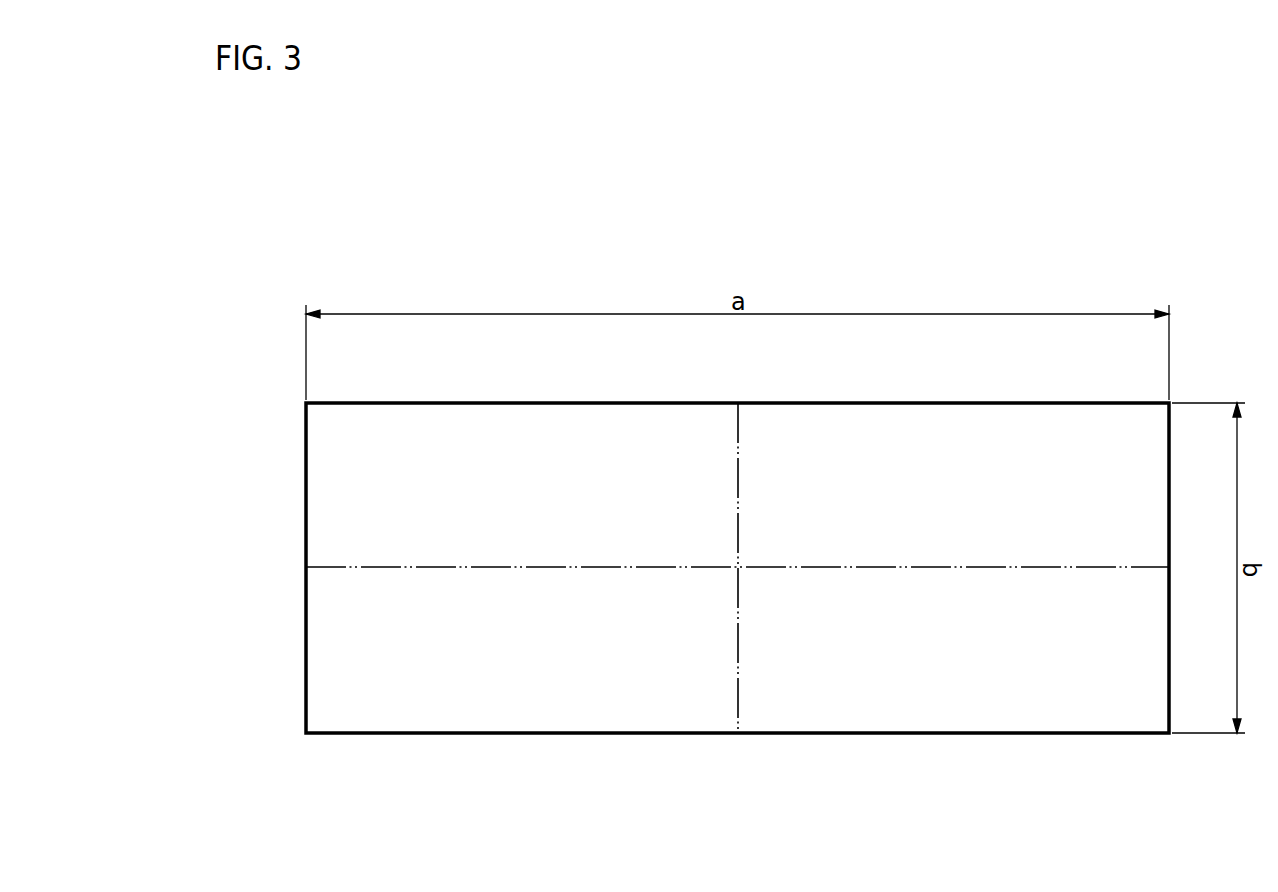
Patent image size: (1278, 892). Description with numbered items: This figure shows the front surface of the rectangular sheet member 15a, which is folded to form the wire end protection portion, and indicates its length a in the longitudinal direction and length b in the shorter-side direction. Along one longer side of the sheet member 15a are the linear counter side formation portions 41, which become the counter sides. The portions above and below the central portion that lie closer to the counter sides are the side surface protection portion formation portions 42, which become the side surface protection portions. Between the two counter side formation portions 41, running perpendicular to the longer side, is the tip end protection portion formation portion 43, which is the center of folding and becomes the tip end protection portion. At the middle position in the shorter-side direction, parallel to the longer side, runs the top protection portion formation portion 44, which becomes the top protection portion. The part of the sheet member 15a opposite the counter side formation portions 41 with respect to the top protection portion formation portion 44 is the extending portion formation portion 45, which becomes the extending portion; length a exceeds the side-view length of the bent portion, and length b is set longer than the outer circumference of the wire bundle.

The sheet member 15a is at (787, 474).
The counter side formation portion 41 is at (652, 735).
The side surface protection portion formation portion 42 is at (473, 676).
The tip end protection portion formation portion 43 is at (738, 483).
The top protection portion formation portion 44 is at (886, 568).
The extending portion formation portion 45 is at (658, 428).